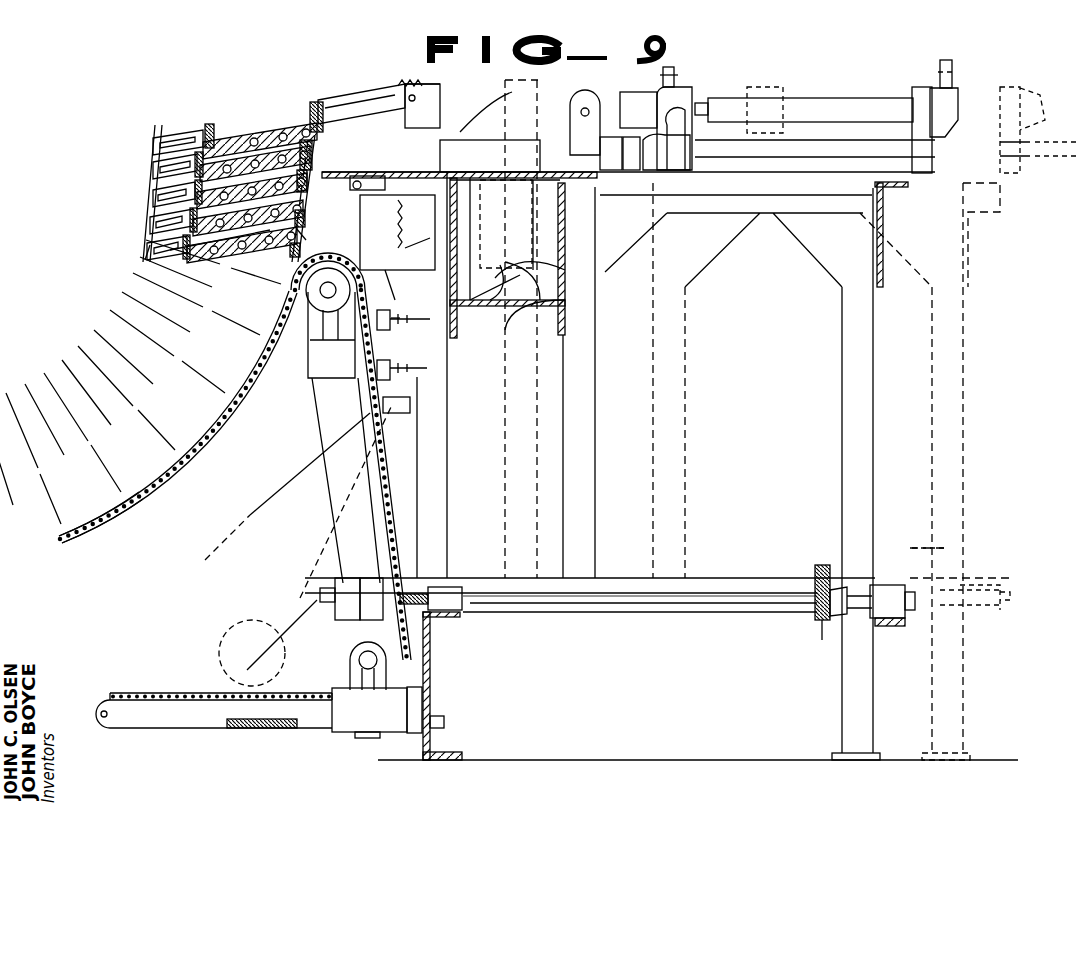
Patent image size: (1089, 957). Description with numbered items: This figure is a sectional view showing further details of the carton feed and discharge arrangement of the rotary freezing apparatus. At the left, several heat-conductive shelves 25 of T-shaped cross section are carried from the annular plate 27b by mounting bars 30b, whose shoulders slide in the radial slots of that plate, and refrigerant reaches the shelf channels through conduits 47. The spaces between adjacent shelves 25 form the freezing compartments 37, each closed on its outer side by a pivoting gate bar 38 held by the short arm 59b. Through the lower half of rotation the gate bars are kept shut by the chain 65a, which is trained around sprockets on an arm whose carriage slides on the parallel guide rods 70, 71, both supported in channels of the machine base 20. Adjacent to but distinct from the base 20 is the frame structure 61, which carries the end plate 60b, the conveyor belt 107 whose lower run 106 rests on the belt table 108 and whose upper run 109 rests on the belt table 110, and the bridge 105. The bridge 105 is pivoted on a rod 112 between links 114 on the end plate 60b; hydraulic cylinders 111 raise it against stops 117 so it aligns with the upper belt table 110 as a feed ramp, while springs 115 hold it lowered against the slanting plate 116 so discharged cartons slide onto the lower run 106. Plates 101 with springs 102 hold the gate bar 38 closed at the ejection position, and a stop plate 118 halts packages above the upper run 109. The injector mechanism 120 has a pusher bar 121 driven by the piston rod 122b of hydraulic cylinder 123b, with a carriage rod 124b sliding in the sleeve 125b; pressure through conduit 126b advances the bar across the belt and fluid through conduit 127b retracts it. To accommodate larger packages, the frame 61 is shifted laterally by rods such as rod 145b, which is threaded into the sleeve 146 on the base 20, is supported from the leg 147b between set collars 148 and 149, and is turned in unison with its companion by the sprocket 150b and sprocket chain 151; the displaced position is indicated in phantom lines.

The base 20 is at (446, 761).
The shelf 25 is at (272, 165).
The annular plate 27b is at (160, 143).
The bar 30b is at (170, 248).
The gate bar 38 is at (322, 142).
The guide 59b is at (327, 243).
The conduit 47 is at (170, 240).
The freezing compartment 37 is at (275, 240).
The chain 65a is at (150, 690).
The guide rod 71 is at (160, 722).
The guide rod 70 is at (318, 724).
The frame structure 61 is at (480, 590).
The threaded sleeve 146 is at (450, 588).
The rod 145b is at (768, 578).
The leg 147b is at (855, 552).
The set collar 148 is at (868, 590).
The set collar 149 is at (900, 615).
The sprocket 150b is at (818, 622).
The sprocket chain 151 is at (822, 632).
The hydraulic cylinder 111 is at (430, 350).
The spring 115 is at (462, 372).
The slanting plate 116 is at (496, 312).
The belt table 108 is at (548, 320).
The lower run 106 is at (565, 268).
The conveyor belt 107 is at (498, 290).
The plate 60b is at (507, 258).
The belt table 110 is at (505, 186).
The link 114 is at (402, 228).
The rod 112 is at (390, 220).
The upper run 109 is at (500, 152).
The bridge 105 is at (392, 172).
The stop plate 118 is at (486, 112).
The plate 101 is at (440, 95).
The spring 102 is at (425, 85).
The stop 117 is at (401, 75).
The pusher bar 121 is at (612, 165).
The piston rod 122b is at (612, 110).
The sleeve 125b is at (665, 160).
The carriage rod 124b is at (800, 150).
The conduit 127b is at (680, 68).
The injector mechanism 120 is at (820, 102).
The hydraulic cylinder 123b is at (850, 108).
The conduit 126b is at (950, 60).